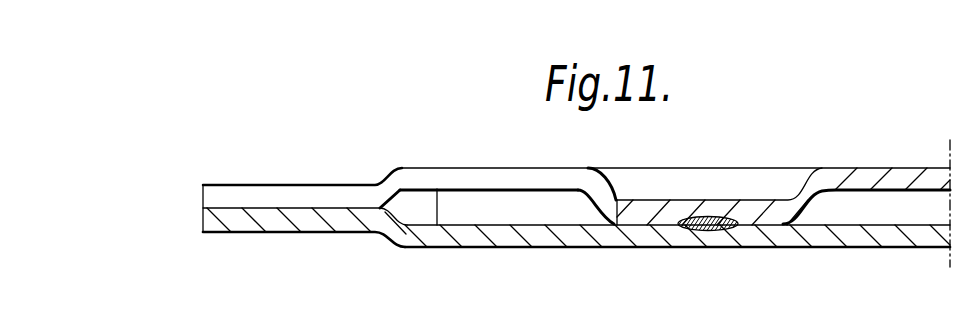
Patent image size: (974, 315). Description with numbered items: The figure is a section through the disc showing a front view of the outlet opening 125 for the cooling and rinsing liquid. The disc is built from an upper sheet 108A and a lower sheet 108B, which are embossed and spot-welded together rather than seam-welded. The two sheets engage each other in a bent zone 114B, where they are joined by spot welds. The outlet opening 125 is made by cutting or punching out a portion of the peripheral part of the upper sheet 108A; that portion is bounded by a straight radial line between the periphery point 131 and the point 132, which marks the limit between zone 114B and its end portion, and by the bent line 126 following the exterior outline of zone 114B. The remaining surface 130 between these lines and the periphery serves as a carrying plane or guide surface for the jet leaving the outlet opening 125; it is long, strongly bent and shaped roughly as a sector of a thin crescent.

The periphery point 131 is at (205, 210).
The carrying plane 130 is at (437, 189).
The outlet opening 125 is at (472, 205).
The bent line 126 is at (574, 163).
The limit point 132 is at (617, 202).
The bent zone 114B is at (732, 200).
The upper sheet 108A is at (893, 165).
The lower sheet 108B is at (847, 247).